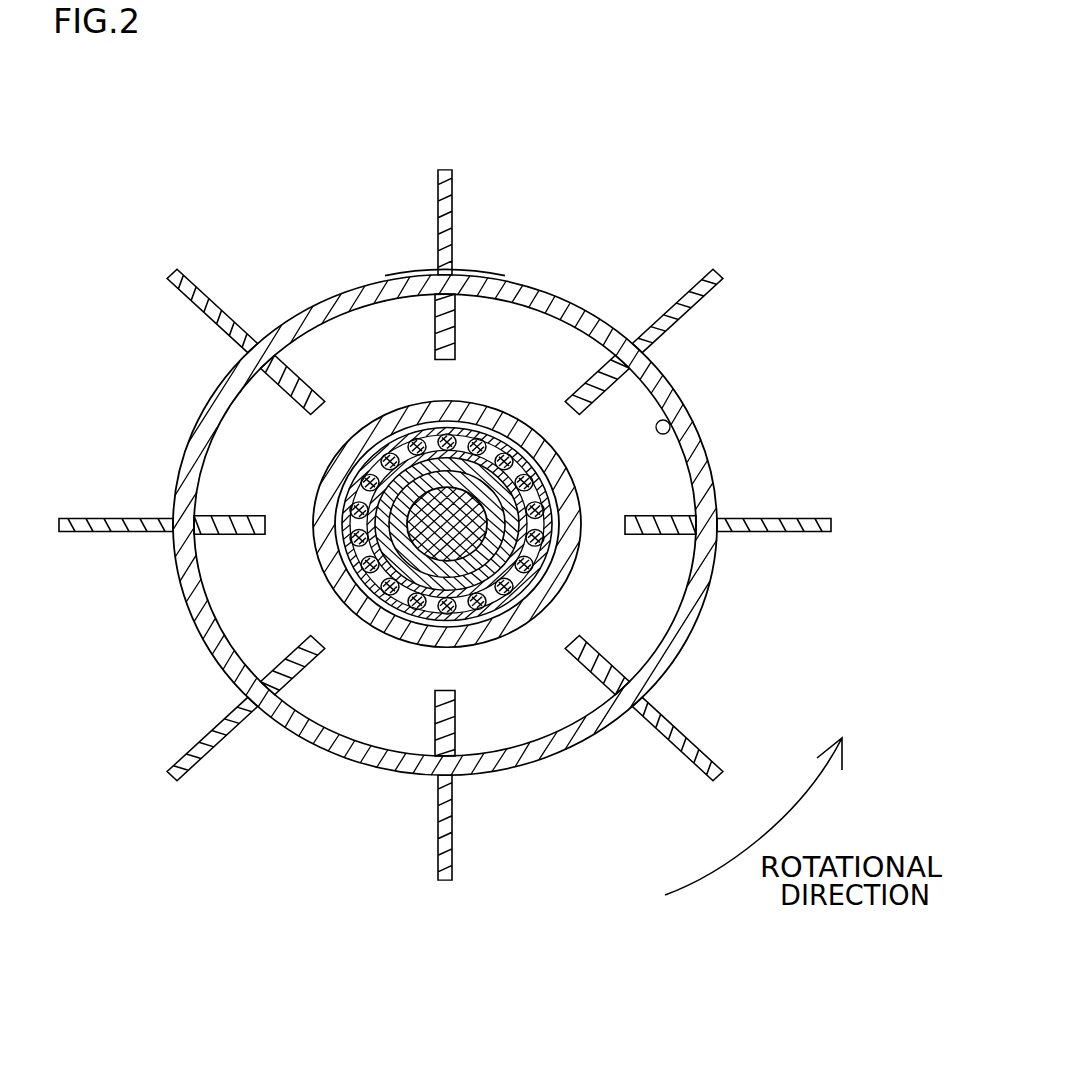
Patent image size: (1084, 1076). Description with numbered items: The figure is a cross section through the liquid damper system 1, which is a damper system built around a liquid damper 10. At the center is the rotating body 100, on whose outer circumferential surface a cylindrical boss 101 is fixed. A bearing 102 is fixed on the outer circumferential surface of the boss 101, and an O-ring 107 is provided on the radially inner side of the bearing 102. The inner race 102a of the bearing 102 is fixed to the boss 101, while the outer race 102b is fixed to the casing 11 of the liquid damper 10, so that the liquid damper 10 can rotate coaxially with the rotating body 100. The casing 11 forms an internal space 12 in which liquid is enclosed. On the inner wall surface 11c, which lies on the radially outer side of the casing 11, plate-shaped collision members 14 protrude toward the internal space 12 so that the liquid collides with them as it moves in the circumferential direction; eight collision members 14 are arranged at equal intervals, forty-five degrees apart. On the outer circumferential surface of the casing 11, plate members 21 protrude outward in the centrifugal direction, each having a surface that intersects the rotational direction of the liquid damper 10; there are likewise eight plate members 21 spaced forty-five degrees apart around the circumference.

The liquid damper system 1 is at (219, 203).
The liquid damper 10 is at (585, 296).
The casing 11 is at (712, 471).
The inner wall surface 11c is at (668, 421).
The internal space 12 is at (383, 377).
The collision member 14 is at (458, 318).
The plate member 21 is at (693, 300).
The rotating body 100 is at (398, 612).
The boss 101 is at (397, 562).
The bearing 102 is at (476, 599).
The inner race 102a is at (510, 610).
The outer race 102b is at (453, 615).
The O-ring 107 is at (355, 495).